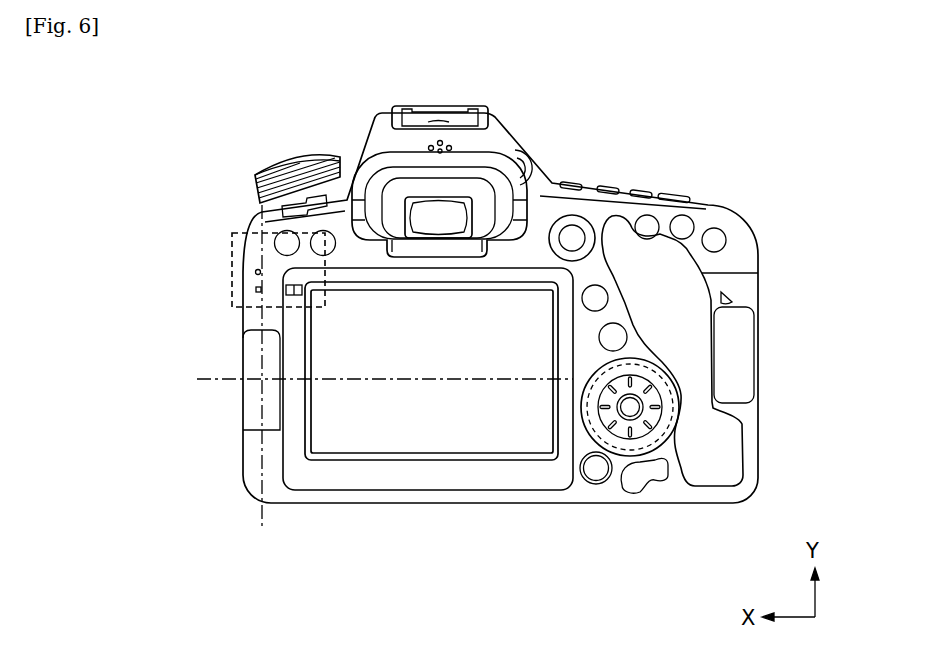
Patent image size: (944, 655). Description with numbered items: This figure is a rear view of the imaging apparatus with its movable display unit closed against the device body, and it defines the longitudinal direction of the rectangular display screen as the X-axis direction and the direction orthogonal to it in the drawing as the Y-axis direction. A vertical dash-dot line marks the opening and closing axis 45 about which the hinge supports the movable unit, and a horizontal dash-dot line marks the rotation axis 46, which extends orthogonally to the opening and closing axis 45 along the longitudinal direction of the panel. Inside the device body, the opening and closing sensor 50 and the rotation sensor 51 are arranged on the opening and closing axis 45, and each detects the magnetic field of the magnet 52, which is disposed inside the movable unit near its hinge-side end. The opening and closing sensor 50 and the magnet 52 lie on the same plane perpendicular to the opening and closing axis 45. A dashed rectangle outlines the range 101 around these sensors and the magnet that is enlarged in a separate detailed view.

The range 101 is at (232, 242).
The rotation sensor 51 is at (256, 273).
The opening and closing sensor 50 is at (256, 291).
The magnet 52 is at (291, 296).
The rotation axis 46 is at (203, 380).
The opening and closing axis 45 is at (261, 533).